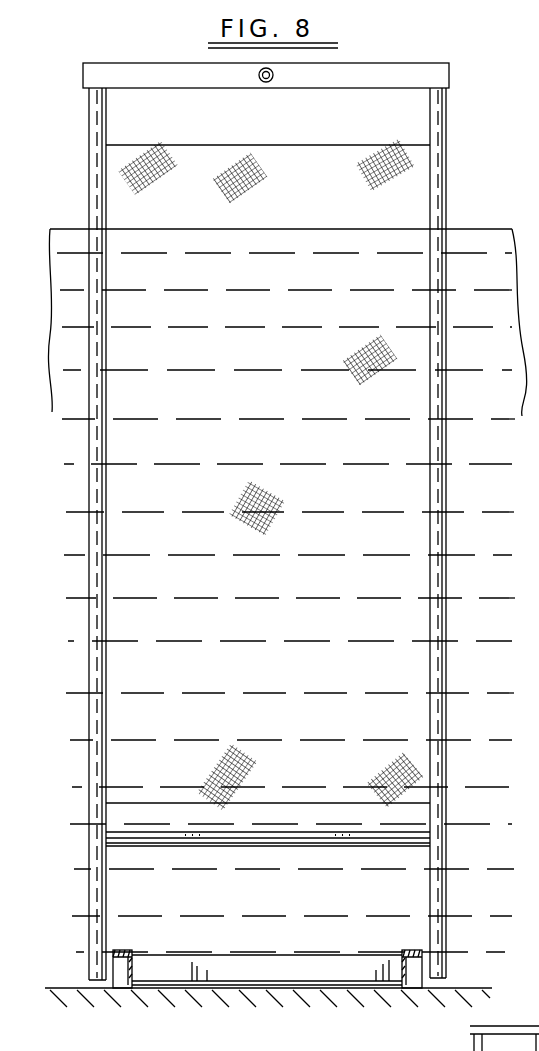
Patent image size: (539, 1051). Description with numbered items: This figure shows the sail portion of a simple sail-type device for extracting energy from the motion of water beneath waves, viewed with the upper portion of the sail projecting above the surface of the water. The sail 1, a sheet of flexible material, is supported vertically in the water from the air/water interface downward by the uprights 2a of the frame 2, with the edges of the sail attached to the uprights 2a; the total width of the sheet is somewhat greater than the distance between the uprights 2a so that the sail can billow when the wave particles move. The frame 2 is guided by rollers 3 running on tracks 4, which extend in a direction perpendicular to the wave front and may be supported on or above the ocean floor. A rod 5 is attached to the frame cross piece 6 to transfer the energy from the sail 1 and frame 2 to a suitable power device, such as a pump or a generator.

The sail 1 is at (415, 209).
The frame 2 is at (449, 177).
The uprights 2a is at (96, 122).
The rollers 3 is at (118, 964).
The tracks 4 is at (131, 983).
The rod 5 is at (268, 83).
The frame cross piece 6 is at (418, 72).